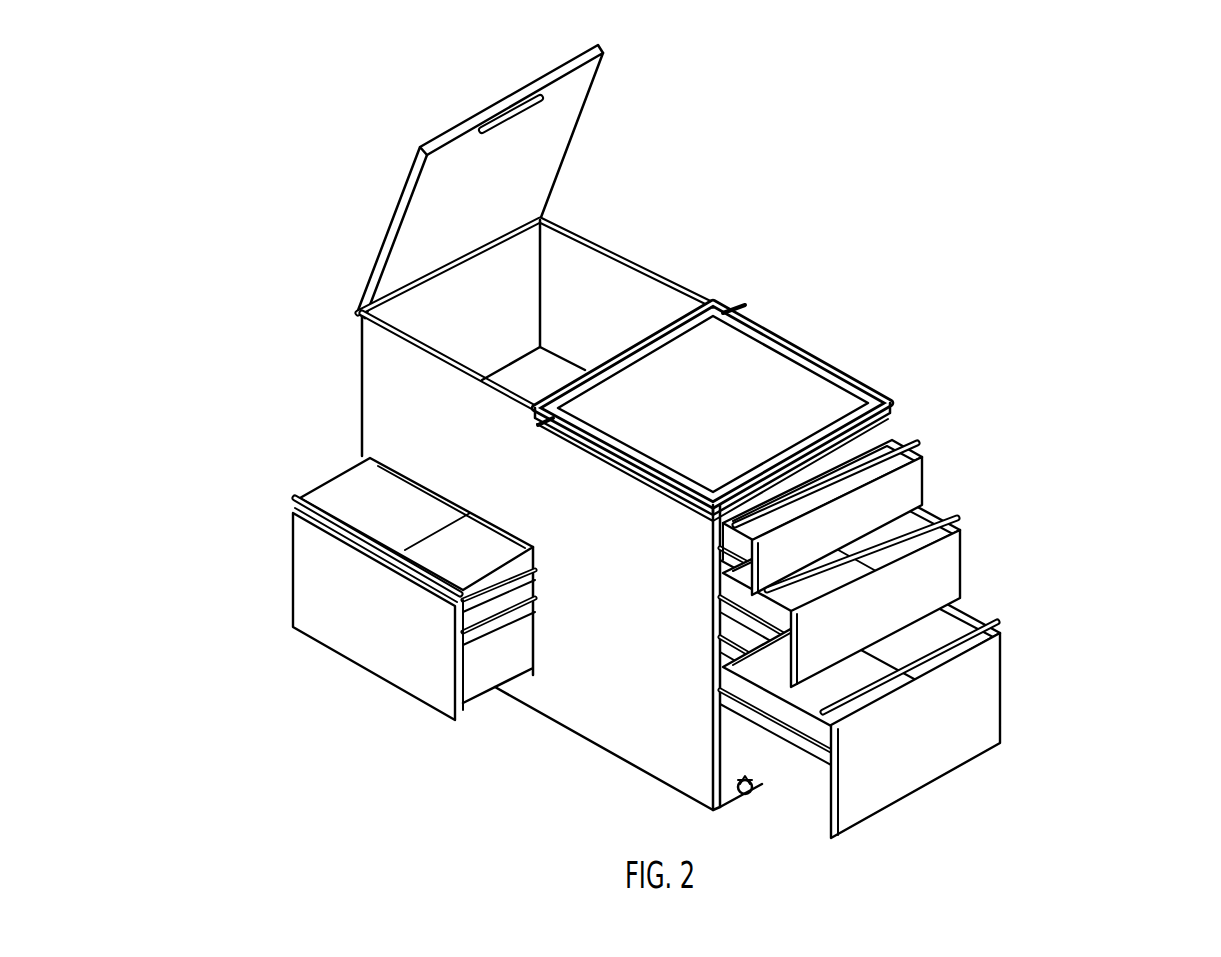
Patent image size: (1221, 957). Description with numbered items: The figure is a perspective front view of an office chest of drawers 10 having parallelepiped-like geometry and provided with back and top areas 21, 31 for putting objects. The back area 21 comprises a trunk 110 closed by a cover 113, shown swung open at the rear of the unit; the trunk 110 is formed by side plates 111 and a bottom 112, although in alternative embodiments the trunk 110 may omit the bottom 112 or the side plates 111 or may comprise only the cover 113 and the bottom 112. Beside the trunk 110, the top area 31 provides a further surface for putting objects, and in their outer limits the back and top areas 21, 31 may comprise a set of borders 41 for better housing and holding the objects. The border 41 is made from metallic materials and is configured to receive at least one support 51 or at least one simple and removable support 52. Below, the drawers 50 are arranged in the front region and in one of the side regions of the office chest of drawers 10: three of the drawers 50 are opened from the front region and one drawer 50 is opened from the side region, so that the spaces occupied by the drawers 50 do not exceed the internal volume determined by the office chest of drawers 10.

The office chest of drawers 10 is at (950, 263).
The back area 21 is at (613, 262).
The top area 31 is at (762, 397).
The border 41 is at (787, 352).
The drawers 50 is at (347, 578).
The support 51 is at (758, 296).
The simple and removable support 52 is at (734, 309).
The trunk 110 is at (515, 226).
The side plates 111 is at (497, 285).
The bottom 112 is at (523, 372).
The cover 113 is at (487, 196).